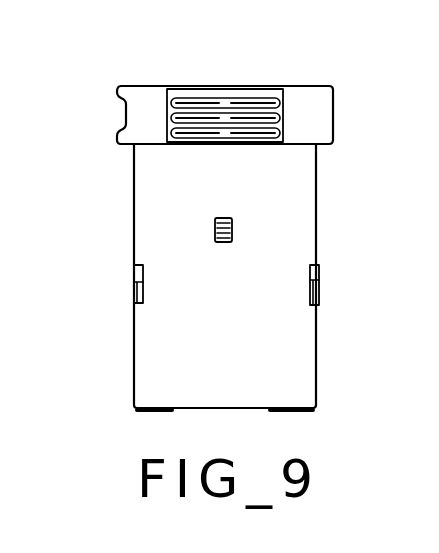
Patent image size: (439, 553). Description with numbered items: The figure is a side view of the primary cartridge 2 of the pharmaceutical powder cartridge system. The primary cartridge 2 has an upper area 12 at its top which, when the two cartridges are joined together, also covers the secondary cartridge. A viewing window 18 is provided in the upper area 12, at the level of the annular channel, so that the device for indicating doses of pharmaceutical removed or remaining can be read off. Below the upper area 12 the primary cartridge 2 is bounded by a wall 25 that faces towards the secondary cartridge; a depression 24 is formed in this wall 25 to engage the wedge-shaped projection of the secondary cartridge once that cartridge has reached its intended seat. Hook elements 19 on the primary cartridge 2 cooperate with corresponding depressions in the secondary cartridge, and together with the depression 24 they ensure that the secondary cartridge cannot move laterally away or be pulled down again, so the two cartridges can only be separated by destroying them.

The primary cartridge 2 is at (152, 383).
The upper area 12 is at (307, 102).
The viewing window 18 is at (122, 108).
The hook elements 19 is at (138, 289).
The depression 24 is at (213, 222).
The wall 25 is at (183, 185).